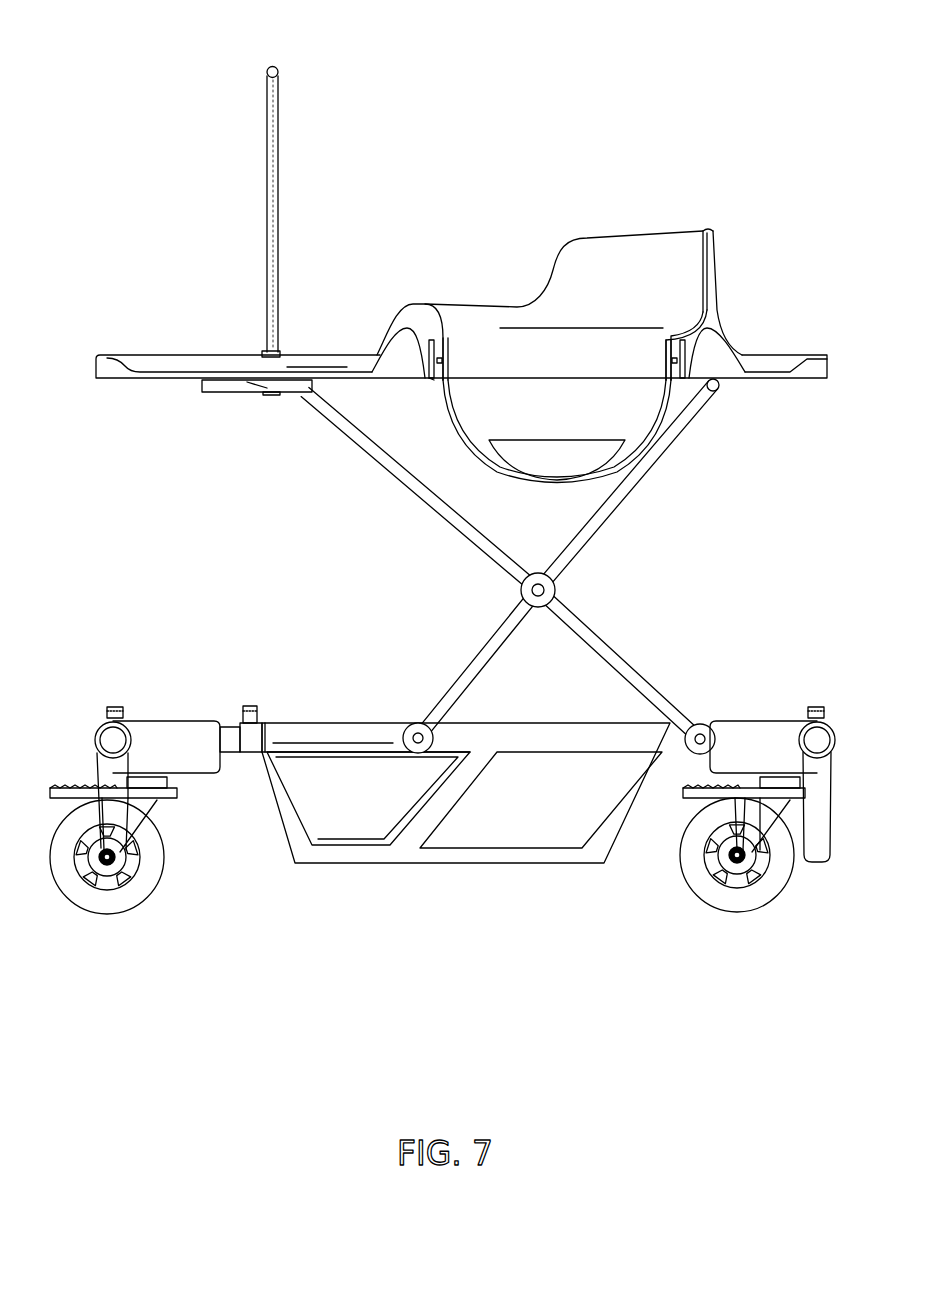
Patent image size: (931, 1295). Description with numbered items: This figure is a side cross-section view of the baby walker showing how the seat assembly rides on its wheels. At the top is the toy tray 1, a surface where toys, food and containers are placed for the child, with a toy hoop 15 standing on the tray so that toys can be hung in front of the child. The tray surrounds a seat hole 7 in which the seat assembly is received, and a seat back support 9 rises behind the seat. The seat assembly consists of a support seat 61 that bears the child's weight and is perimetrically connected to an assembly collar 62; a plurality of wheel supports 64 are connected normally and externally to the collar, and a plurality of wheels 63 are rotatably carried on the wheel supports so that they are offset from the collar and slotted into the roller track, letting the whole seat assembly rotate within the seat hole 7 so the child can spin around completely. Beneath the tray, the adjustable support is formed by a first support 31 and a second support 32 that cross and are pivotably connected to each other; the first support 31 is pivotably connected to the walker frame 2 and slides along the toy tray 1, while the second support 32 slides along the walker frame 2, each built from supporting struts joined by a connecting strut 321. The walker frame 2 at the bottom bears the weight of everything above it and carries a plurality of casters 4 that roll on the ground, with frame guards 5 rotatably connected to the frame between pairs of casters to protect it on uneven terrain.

The toy tray 1 is at (87, 364).
The toy hoop 15 is at (284, 72).
The seat hole 7 is at (558, 352).
The seat back support 9 is at (618, 272).
The support seat 61 is at (571, 421).
The assembly collar 62 is at (448, 372).
The wheel 63 is at (432, 380).
The wheel support 64 is at (442, 352).
The first support 31 is at (461, 540).
The second support 32 is at (595, 549).
The connecting strut 321 is at (400, 472).
The walker frame 2 is at (178, 724).
The frame guard 5 is at (448, 857).
The caster 4 is at (107, 907).